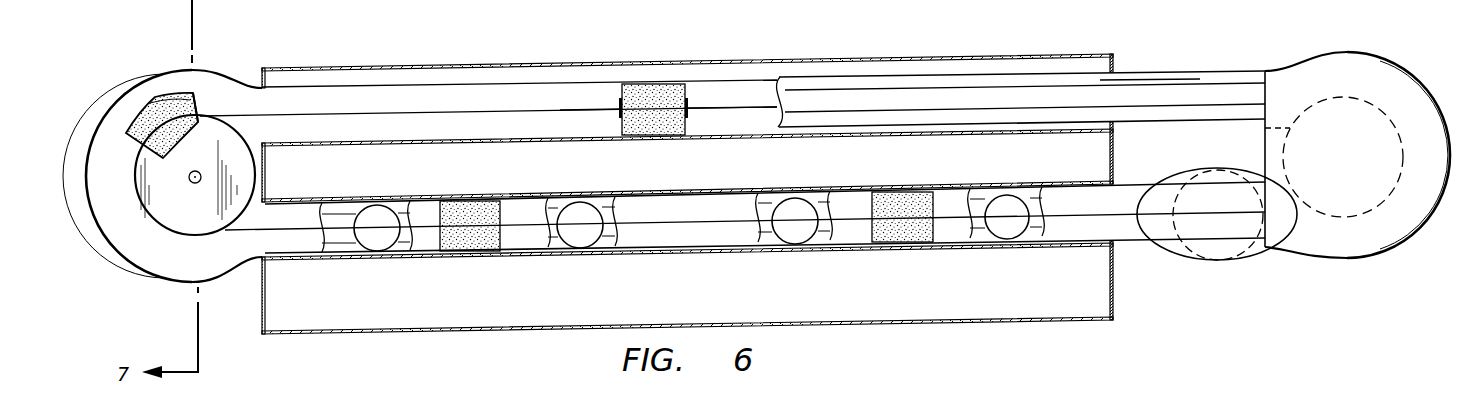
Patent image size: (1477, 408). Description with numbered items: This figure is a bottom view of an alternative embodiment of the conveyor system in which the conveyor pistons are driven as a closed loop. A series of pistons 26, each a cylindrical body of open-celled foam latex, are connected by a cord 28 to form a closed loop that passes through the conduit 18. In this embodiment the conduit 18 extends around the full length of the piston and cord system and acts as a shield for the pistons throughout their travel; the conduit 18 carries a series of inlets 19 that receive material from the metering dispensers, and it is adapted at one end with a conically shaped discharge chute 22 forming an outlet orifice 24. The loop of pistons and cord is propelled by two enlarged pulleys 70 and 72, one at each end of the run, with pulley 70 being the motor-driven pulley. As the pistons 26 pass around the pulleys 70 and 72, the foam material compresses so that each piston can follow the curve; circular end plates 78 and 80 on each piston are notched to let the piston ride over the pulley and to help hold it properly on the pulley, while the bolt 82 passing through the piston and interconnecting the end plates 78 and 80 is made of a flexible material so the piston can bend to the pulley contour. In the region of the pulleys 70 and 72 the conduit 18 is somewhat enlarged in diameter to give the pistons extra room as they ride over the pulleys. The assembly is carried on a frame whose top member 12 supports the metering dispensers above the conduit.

The top member 12 is at (863, 60).
The conduit 18 is at (553, 87).
The inlets 19 is at (363, 242).
The discharge chute 22 is at (1255, 248).
The outlet orifice 24 is at (1195, 250).
The piston 26 is at (148, 110).
The cord 28 is at (597, 110).
The pulley 70 is at (1357, 233).
The pulley 72 is at (200, 214).
The circular end plate 78 is at (195, 118).
The circular end plate 80 is at (117, 133).
The bolt 82 is at (167, 117).